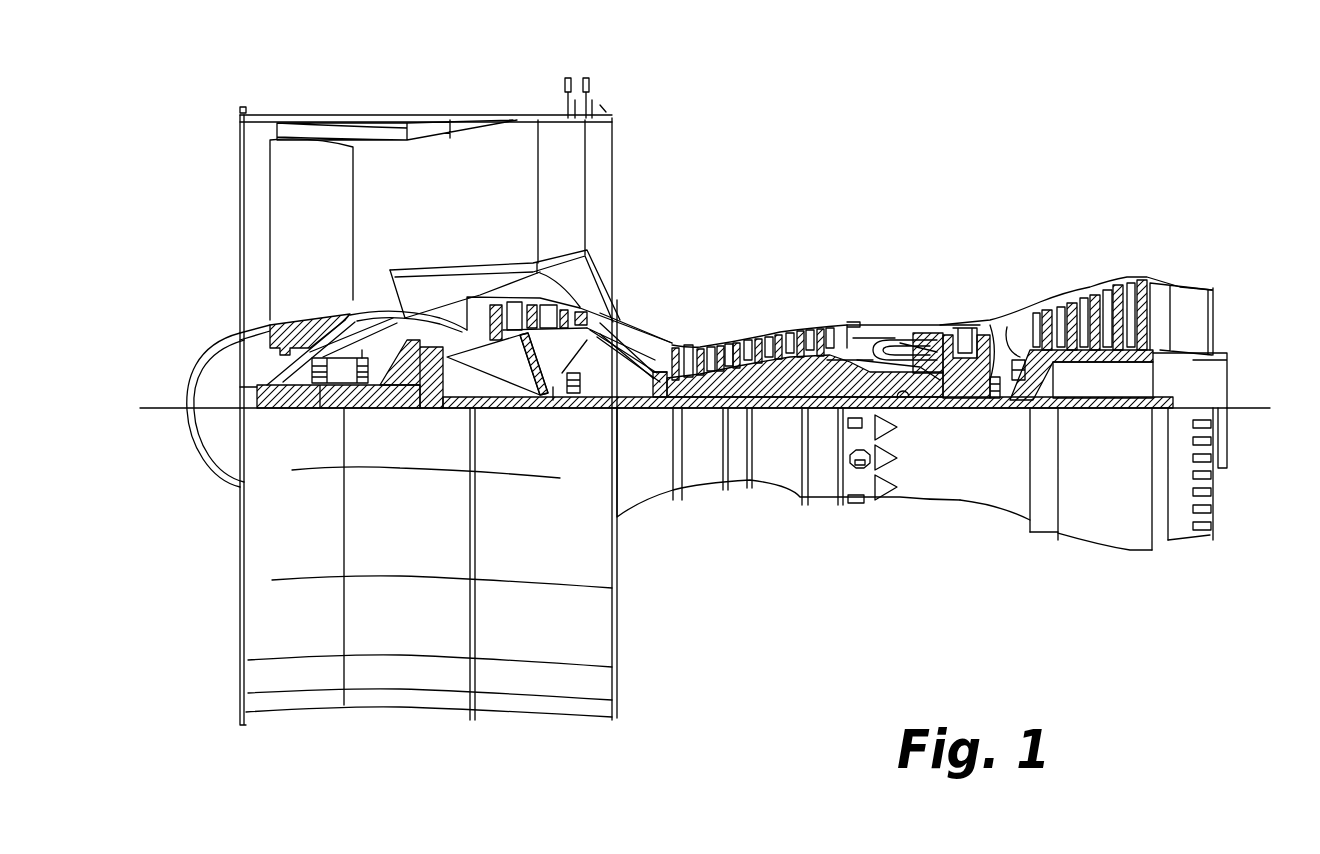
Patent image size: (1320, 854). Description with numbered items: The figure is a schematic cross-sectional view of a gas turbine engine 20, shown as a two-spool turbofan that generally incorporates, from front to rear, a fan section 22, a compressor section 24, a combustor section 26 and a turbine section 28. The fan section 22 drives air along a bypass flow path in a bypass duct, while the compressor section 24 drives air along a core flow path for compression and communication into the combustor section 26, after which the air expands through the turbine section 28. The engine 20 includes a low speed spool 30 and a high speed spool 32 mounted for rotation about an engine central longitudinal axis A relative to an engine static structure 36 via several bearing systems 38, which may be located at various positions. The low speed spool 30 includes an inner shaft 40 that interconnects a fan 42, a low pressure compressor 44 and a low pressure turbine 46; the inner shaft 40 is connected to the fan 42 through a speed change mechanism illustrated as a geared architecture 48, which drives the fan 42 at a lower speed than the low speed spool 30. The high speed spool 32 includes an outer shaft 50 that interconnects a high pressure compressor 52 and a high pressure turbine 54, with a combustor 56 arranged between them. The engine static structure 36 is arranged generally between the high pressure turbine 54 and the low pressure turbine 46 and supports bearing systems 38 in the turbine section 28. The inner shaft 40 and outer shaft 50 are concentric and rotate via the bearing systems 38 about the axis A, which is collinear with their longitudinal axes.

The gas turbine engine 20 is at (915, 150).
The fan section 22 is at (455, 82).
The compressor section 24 is at (890, 236).
The combustor section 26 is at (992, 236).
The turbine section 28 is at (1168, 236).
The low speed spool 30 is at (783, 420).
The high speed spool 32 is at (822, 372).
The engine static structure 36 is at (823, 505).
The bearing systems 38 is at (325, 410).
The inner shaft 40 is at (632, 412).
The fan 42 is at (318, 254).
The low pressure compressor 44 is at (547, 303).
The low pressure turbine 46 is at (1097, 300).
The geared architecture 48 is at (437, 392).
The outer shaft 50 is at (908, 397).
The high pressure compressor 52 is at (753, 382).
The high pressure turbine 54 is at (965, 328).
The combustor 56 is at (897, 348).
The engine central longitudinal axis A is at (1255, 410).